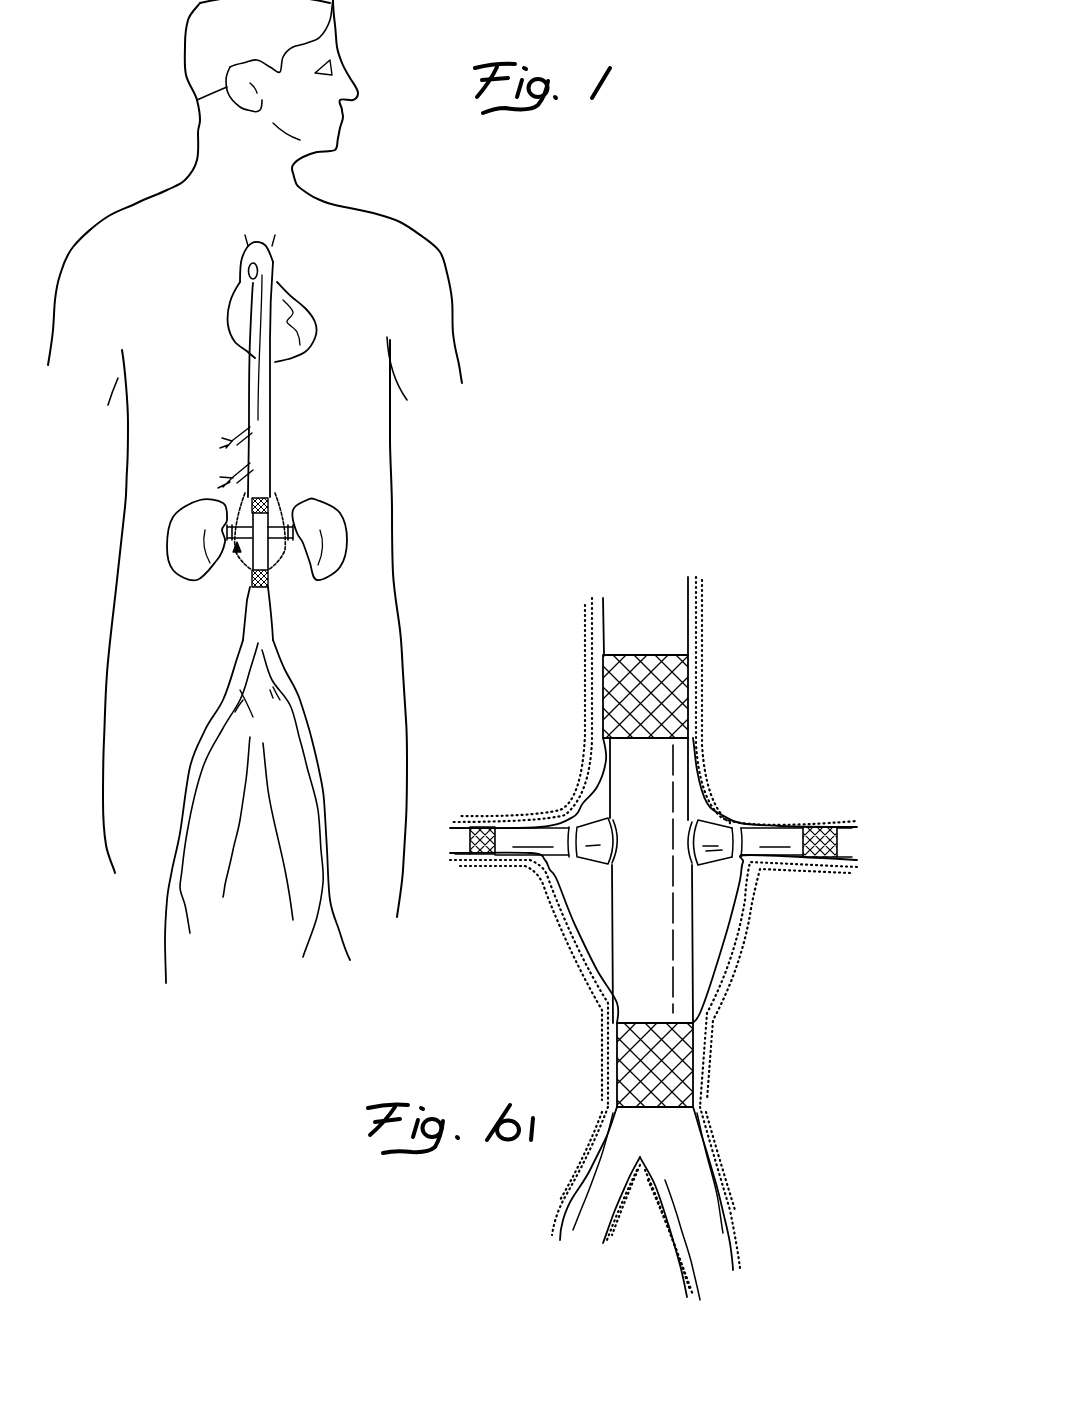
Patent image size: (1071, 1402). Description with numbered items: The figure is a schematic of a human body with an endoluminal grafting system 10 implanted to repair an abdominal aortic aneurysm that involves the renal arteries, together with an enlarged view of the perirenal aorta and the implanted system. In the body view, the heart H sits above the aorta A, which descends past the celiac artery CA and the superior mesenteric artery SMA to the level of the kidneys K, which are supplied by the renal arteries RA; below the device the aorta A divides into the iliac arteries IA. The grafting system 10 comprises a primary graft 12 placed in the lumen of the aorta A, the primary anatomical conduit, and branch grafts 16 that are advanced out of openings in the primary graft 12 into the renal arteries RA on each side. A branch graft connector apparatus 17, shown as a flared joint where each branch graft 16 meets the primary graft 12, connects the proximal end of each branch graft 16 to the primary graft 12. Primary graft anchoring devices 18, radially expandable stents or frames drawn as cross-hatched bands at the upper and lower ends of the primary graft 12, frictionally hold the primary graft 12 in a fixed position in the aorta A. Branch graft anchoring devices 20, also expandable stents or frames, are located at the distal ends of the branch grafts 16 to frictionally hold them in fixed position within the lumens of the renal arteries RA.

In FIG. 1, the endoluminal grafting system 10 is at (250, 520).
In FIG. 1A, the endoluminal grafting system 10 is at (717, 722).
In FIG. 1A, the primary graft 12 is at (670, 767).
In FIG. 1A, the branch graft 16 is at (777, 837).
In FIG. 1A, the branch graft connector apparatus 17 is at (599, 820).
In FIG. 1A, the primary graft anchoring device 18 is at (680, 687).
In FIG. 1A, the branch graft anchoring device 20 is at (487, 827).
In FIG. 1, the heart H is at (293, 293).
In FIG. 1, the aorta A is at (260, 377).
In FIG. 1A, the aorta A is at (597, 632).
In FIG. 1, the celiac artery CA is at (227, 433).
In FIG. 1, the superior mesenteric artery SMA is at (240, 480).
In FIG. 1, the kidneys K is at (217, 507).
In FIG. 1, the renal arteries RA is at (287, 547).
In FIG. 1A, the renal arteries RA is at (528, 858).
In FIG. 1, the iliac artery IA is at (270, 668).
In FIG. 1A, the iliac artery IA is at (583, 1200).